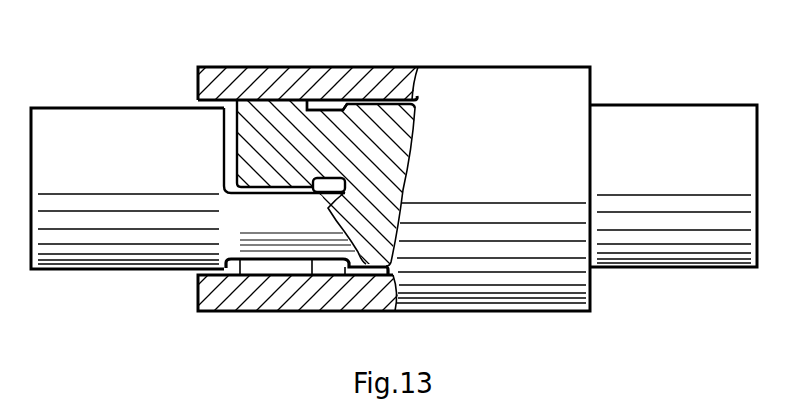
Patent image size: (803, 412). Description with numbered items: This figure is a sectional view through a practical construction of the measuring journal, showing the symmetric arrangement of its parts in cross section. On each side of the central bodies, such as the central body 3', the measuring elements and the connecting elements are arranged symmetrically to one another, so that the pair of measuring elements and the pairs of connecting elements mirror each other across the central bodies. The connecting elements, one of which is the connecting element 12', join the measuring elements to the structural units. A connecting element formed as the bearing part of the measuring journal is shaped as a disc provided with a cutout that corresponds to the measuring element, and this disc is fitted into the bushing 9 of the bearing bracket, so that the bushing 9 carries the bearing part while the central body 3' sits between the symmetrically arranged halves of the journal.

The connecting element 12' is at (673, 169).
The central body 3' is at (402, 176).
The bushing 9 is at (213, 292).